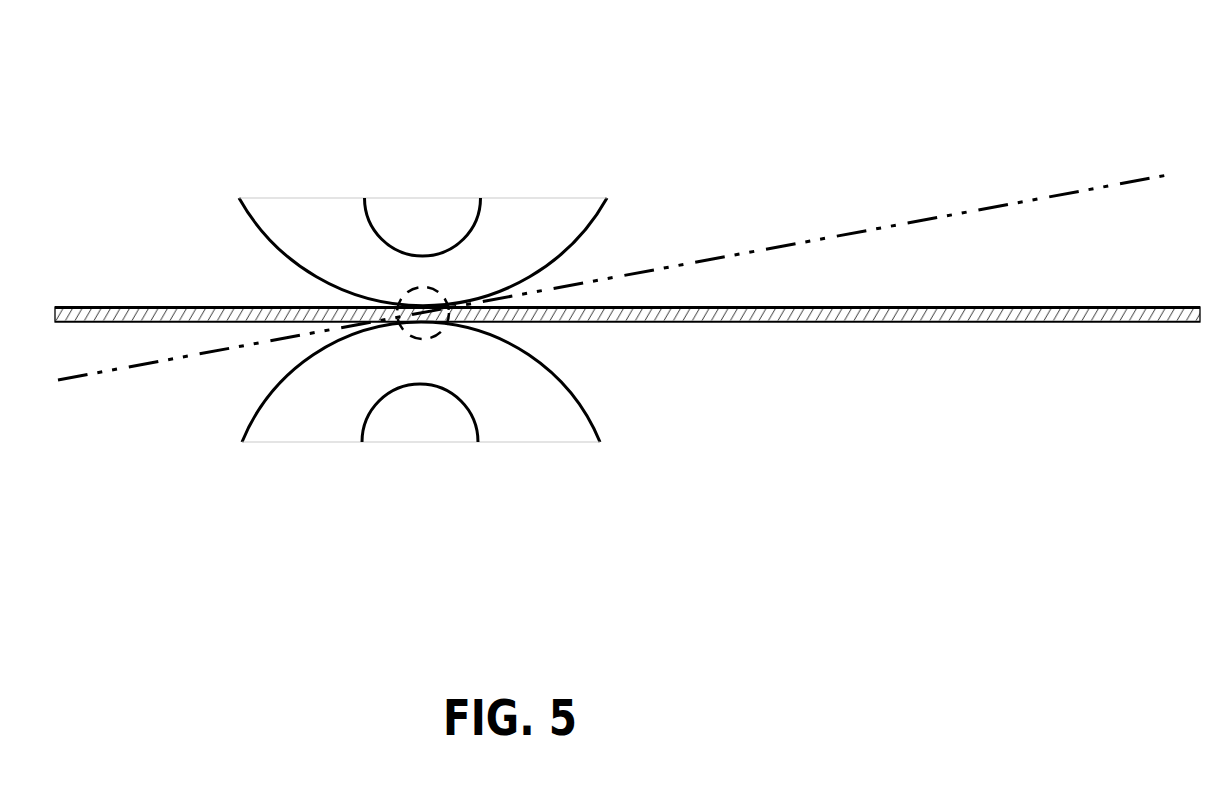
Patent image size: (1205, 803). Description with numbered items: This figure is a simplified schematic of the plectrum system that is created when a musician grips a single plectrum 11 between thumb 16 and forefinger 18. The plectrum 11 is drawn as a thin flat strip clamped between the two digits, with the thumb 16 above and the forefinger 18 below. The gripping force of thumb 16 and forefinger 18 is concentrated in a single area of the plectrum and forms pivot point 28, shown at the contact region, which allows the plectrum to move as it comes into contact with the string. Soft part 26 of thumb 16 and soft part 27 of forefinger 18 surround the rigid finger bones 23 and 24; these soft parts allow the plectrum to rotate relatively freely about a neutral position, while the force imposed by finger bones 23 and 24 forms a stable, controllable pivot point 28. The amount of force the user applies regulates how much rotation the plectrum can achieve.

The substrate web 11 is at (935, 317).
The thumb 16 is at (462, 165).
The forefinger 18 is at (320, 450).
The finger bone 23 is at (415, 210).
The finger bone 24 is at (408, 425).
The soft part of thumb 26 is at (308, 198).
The soft part of forefinger 27 is at (522, 403).
The pivot point 28 is at (443, 290).